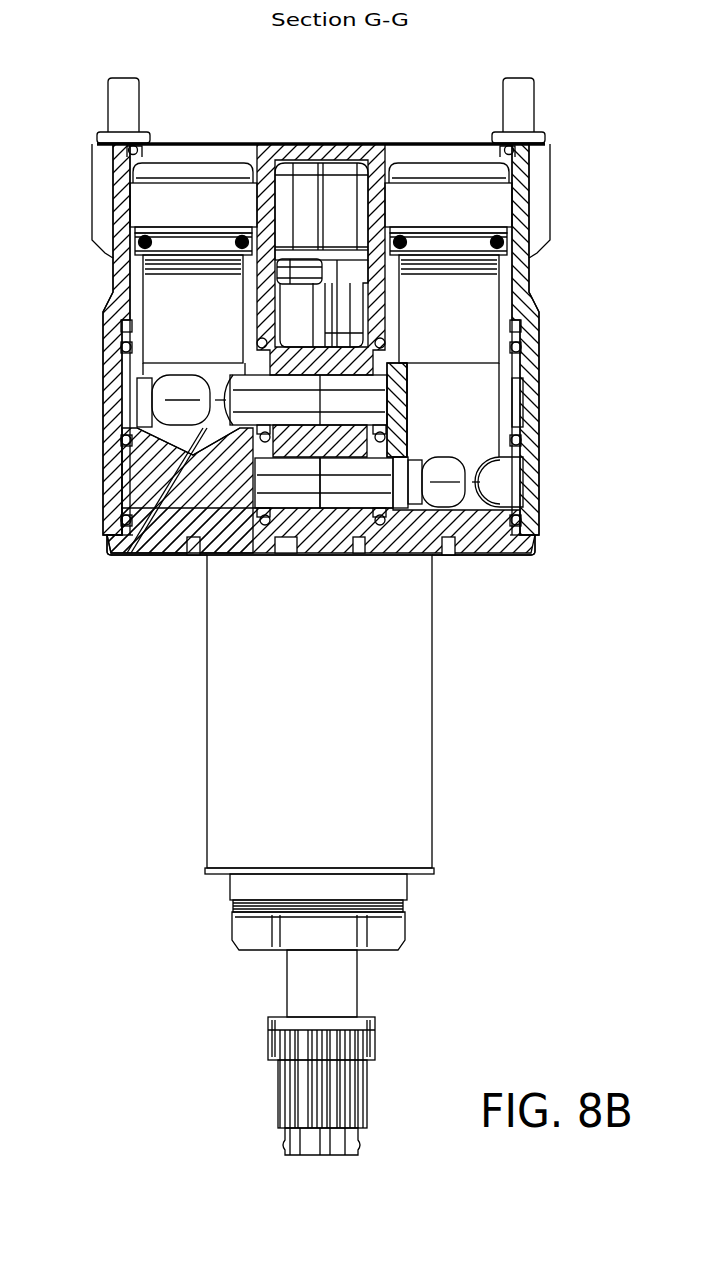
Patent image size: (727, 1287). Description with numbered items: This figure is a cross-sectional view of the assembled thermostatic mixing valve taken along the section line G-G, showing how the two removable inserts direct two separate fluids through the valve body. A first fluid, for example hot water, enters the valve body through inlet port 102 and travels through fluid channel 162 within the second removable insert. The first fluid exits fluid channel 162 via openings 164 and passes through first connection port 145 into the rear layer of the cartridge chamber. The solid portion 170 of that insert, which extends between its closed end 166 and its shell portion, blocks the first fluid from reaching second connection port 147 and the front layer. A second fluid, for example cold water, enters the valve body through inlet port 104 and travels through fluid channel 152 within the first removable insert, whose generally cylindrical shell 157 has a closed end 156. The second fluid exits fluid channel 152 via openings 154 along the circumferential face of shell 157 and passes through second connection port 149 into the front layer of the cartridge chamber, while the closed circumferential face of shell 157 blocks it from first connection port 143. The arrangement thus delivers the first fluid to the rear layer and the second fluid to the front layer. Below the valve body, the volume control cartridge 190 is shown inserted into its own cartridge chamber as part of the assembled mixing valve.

The inlet port 102 is at (203, 143).
The inlet port 104 is at (438, 143).
The fluid channel 162 is at (163, 302).
The fluid channel 152 is at (468, 302).
The first connection port 145 is at (253, 400).
The first connection port 143 is at (405, 395).
The openings 164 is at (172, 393).
The shell 157 is at (378, 412).
The openings 154 is at (438, 470).
The solid portion 170 is at (170, 488).
The closed end 166 is at (145, 557).
The closed end 156 is at (512, 557).
The second connection port 147 is at (302, 483).
The second connection port 149 is at (338, 483).
The volume control cartridge 190 is at (237, 780).